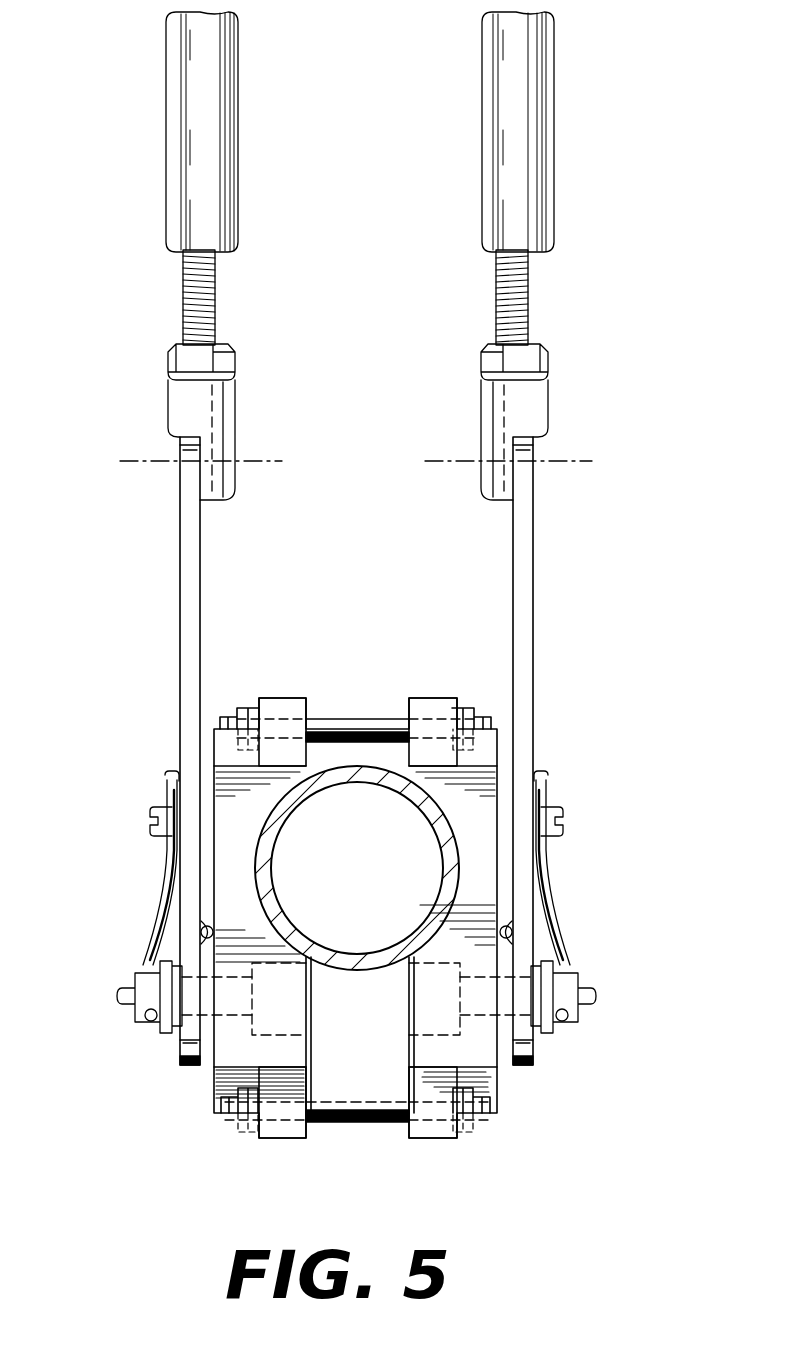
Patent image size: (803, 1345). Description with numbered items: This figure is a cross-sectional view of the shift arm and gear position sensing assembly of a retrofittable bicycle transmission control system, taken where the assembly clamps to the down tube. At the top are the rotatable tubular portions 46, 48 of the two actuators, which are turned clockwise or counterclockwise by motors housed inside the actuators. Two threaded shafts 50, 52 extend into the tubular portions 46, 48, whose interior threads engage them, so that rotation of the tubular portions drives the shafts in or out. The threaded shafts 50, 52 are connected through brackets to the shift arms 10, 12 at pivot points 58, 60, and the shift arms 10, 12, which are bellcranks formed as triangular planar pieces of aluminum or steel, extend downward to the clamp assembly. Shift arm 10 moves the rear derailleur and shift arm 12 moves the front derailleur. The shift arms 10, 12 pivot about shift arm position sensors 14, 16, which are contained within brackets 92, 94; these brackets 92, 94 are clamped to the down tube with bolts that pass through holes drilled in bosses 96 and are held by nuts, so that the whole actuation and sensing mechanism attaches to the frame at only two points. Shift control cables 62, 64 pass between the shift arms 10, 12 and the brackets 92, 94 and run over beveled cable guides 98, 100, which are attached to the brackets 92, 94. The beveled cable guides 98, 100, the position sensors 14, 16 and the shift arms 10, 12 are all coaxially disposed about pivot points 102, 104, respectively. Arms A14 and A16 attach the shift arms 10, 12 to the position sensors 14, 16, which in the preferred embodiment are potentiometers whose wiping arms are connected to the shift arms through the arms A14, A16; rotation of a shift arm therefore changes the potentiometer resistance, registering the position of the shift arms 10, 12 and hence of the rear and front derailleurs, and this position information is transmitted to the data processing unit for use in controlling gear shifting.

The shift arm 10 is at (182, 545).
The shift arm 12 is at (534, 550).
The shift arm position sensor 14 is at (280, 1020).
The shift arm position sensor 16 is at (430, 998).
The rotatable tubular portion 46 is at (180, 105).
The rotatable tubular portion 48 is at (530, 108).
The threaded shaft 50 is at (183, 288).
The threaded shaft 52 is at (529, 290).
The pivot point 58 is at (148, 458).
The pivot point 60 is at (578, 458).
The shift control cable 62 is at (205, 925).
The shift control cable 64 is at (509, 928).
The bracket 92 is at (298, 822).
The bracket 94 is at (440, 860).
The boss 96 is at (275, 700).
The beveled cable guide 98 is at (206, 1058).
The beveled cable guide 100 is at (507, 1058).
The pivot point 102 is at (122, 992).
The pivot point 104 is at (596, 992).
The arm A14 is at (156, 915).
The arm A16 is at (566, 935).